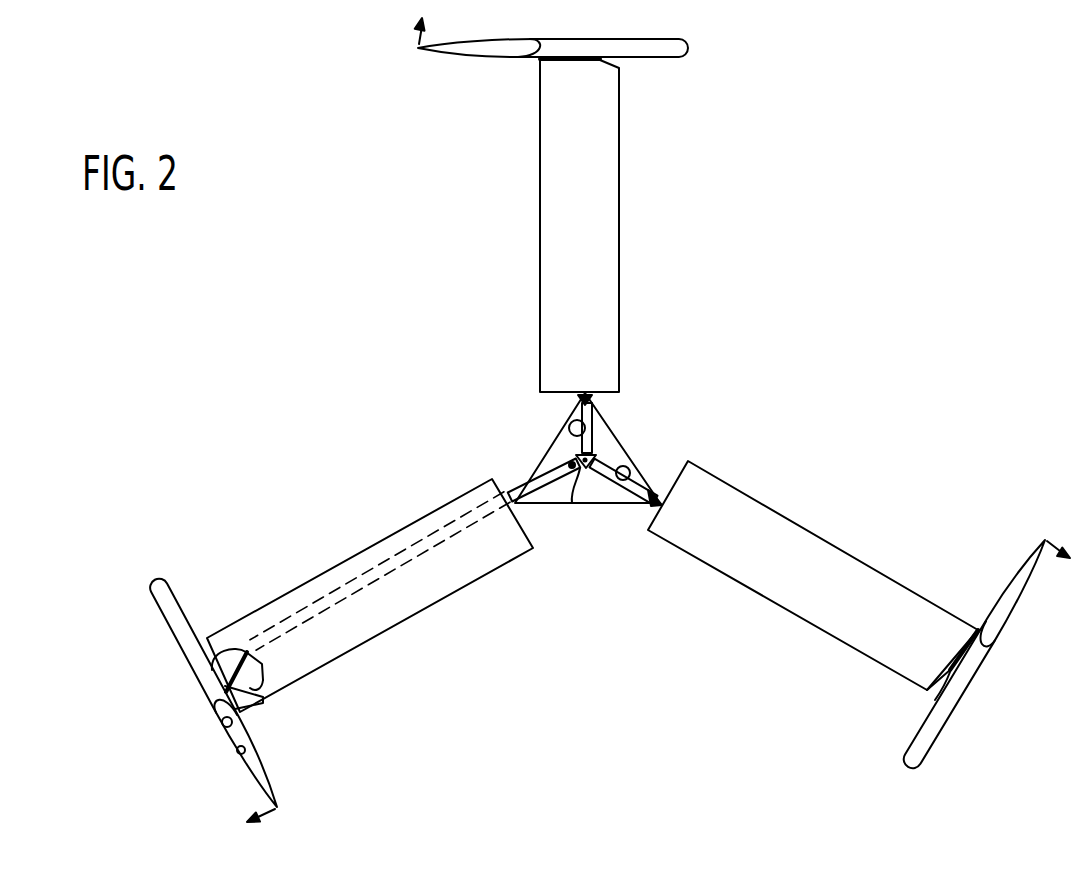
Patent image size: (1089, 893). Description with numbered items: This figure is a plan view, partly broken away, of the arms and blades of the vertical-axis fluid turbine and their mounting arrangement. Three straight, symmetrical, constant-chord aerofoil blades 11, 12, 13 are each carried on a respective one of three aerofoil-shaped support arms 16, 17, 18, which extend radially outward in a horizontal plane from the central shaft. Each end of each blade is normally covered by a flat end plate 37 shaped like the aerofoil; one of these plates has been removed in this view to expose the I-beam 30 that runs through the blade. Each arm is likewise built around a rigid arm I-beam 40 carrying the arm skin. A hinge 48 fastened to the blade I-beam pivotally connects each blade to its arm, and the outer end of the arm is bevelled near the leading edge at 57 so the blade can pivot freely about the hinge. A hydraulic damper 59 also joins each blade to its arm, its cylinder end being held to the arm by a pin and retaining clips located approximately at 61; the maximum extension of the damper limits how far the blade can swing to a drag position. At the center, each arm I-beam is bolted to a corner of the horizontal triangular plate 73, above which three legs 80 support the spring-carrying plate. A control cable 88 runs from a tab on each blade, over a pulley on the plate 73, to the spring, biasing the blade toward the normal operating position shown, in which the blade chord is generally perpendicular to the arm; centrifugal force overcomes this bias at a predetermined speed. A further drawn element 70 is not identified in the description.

The aerofoil-shaped blade 11 is at (975, 693).
The aerofoil-shaped blade 12 is at (652, 52).
The aerofoil-shaped blade 13 is at (162, 630).
The support arm 16 is at (886, 584).
The support arm 17 is at (612, 287).
The support arm 18 is at (466, 581).
The I-beam 30 is at (238, 762).
The flat end plate 37 is at (477, 60).
The arm I-beam 40 is at (510, 492).
The hinge 48 is at (200, 680).
The bevel 57 is at (607, 62).
The hydraulic damper 59 is at (262, 686).
The pin and retaining clips location 61 is at (246, 650).
The link 70 is at (935, 700).
The triangular shaped plate 73 is at (537, 457).
The legs 80 is at (592, 428).
The control cable 88 is at (372, 610).